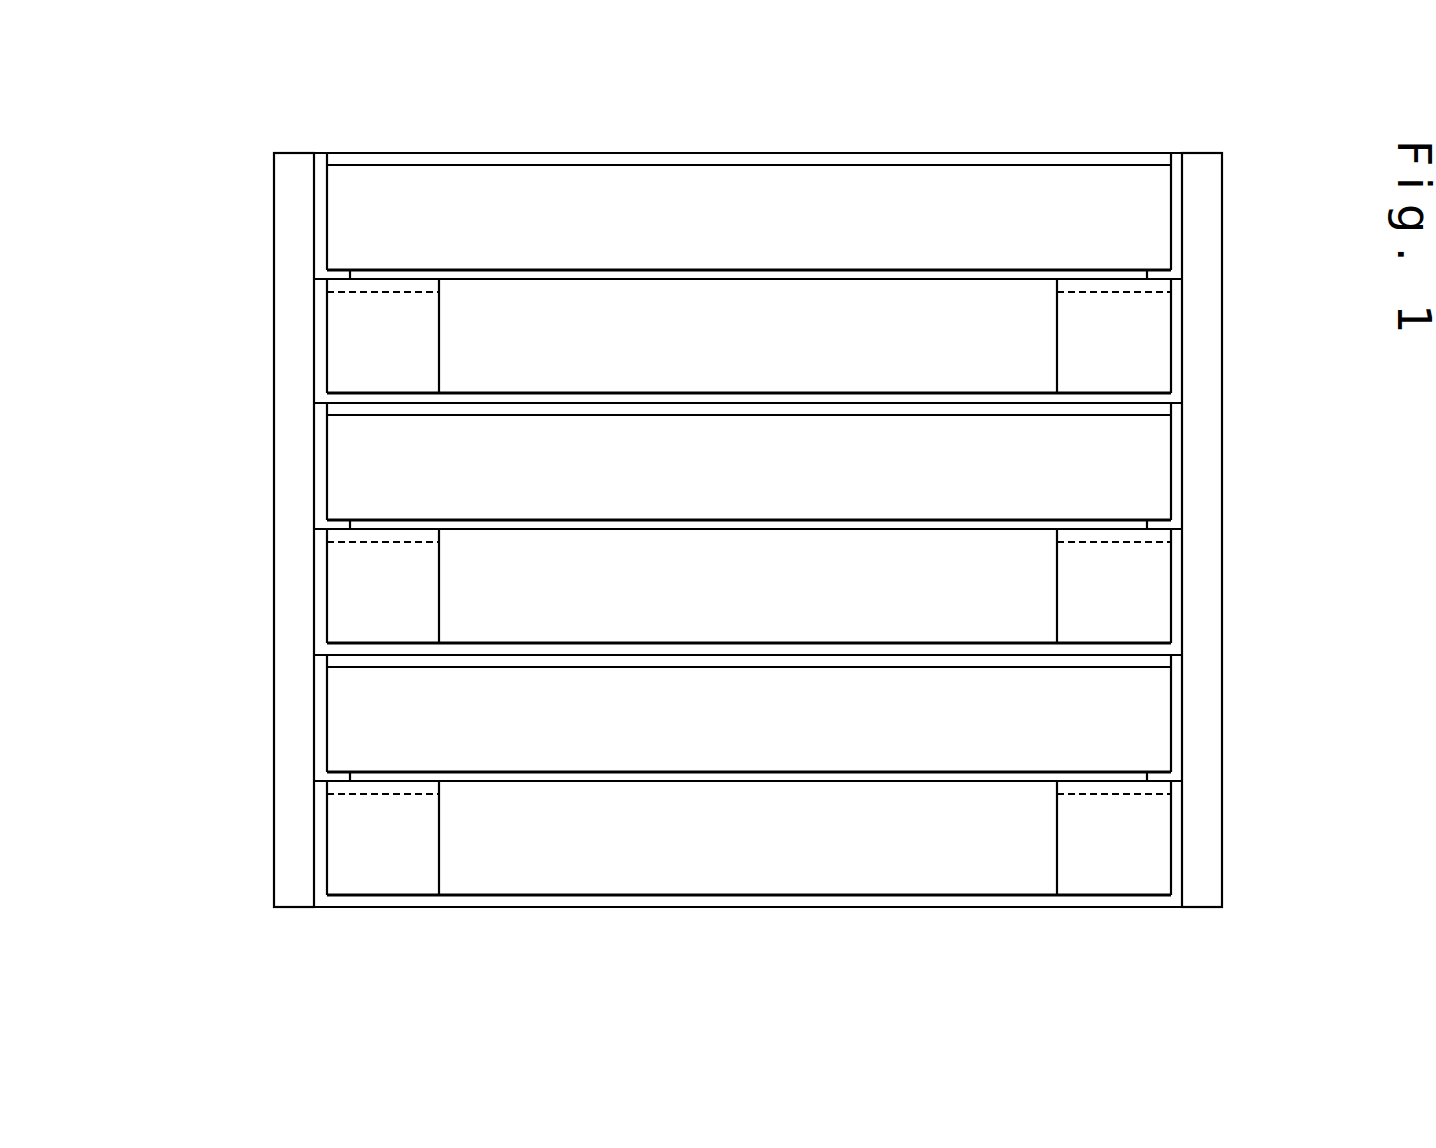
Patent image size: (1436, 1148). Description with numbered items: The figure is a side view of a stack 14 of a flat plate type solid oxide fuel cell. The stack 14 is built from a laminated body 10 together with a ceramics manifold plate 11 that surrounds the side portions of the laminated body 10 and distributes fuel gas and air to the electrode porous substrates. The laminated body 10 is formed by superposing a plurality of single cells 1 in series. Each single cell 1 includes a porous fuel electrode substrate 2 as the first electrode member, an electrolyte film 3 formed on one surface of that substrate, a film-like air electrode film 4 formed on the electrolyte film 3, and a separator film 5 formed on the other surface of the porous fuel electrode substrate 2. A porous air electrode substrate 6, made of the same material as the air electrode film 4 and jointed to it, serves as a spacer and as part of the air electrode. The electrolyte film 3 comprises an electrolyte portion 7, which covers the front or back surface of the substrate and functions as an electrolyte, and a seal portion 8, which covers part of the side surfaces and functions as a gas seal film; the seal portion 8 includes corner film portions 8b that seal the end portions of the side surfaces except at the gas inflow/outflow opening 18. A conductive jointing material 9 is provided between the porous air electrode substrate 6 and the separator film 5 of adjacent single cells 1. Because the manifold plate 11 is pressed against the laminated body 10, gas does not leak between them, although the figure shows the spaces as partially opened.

The single cell 1 is at (1235, 153).
The porous fuel electrode substrate 2 is at (455, 348).
The electrolyte film 3 is at (955, 298).
The air electrode film 4 is at (520, 271).
The separator film 5 is at (478, 398).
The porous air electrode substrate 6 is at (343, 220).
The electrolyte portion 7 is at (1000, 283).
The seal portion 8 is at (1065, 348).
The corner film portion 8b is at (343, 313).
The conductive jointing material 9 is at (617, 157).
The laminated body 10 is at (1030, 137).
The ceramics manifold plate 11 is at (292, 892).
The stack 14 is at (1262, 137).
The gas inflow/outflow opening 18 is at (779, 348).